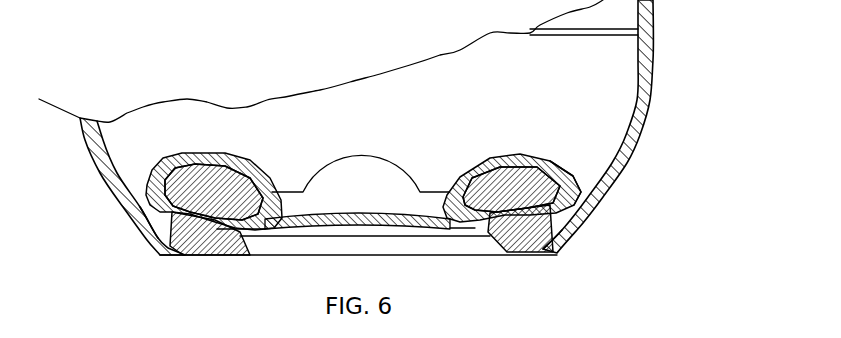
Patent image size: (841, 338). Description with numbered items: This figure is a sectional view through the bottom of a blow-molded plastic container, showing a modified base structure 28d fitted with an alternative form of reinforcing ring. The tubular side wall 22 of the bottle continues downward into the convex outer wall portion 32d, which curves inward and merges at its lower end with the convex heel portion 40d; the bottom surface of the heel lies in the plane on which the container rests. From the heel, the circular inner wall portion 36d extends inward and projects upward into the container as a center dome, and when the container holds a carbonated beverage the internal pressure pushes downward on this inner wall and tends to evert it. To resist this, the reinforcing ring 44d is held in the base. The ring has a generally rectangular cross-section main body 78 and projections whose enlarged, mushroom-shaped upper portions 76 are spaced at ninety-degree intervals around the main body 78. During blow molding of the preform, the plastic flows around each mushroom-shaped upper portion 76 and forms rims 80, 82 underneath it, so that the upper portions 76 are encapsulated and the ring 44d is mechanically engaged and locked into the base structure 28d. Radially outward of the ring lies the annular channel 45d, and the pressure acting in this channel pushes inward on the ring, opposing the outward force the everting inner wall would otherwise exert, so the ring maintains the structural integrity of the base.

The tubular side wall 22 is at (653, 10).
The base structure 28d is at (633, 126).
The convex outer wall portion 32d is at (645, 117).
The inner wall portion 36d is at (368, 213).
The heel portion 40d is at (555, 253).
The reinforcing ring 44d is at (528, 253).
The annular channel 45d is at (587, 192).
The mushroom-shaped upper portions 76 is at (255, 170).
The main body 78 is at (188, 254).
The rim 80 is at (244, 236).
The rim 82 is at (162, 242).